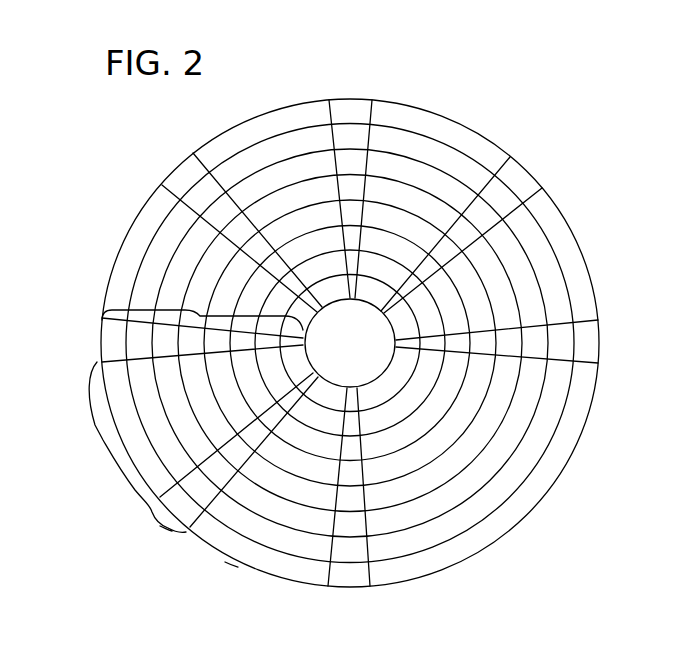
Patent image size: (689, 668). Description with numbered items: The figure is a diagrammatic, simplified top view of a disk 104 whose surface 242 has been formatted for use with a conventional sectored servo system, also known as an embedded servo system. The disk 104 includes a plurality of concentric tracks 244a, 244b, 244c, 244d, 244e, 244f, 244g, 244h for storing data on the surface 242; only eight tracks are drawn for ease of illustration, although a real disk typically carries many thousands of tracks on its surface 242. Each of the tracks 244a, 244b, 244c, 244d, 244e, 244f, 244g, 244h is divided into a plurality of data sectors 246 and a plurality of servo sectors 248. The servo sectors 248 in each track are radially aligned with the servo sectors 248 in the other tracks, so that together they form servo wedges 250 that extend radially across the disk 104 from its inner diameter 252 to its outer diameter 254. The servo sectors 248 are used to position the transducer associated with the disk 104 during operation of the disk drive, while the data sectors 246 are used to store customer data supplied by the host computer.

The disk 104 is at (234, 127).
The surface 242 is at (337, 171).
The concentric track 244a is at (408, 116).
The concentric track 244b is at (443, 155).
The concentric track 244c is at (442, 185).
The concentric track 244d is at (440, 210).
The concentric track 244e is at (430, 453).
The concentric track 244f is at (407, 437).
The concentric track 244g is at (385, 417).
The concentric track 244h is at (367, 397).
The data sector 246 is at (103, 440).
The servo sector 248 is at (165, 527).
The servo wedge 250 is at (196, 308).
The inner diameter 252 is at (312, 365).
The outer diameter 254 is at (236, 566).